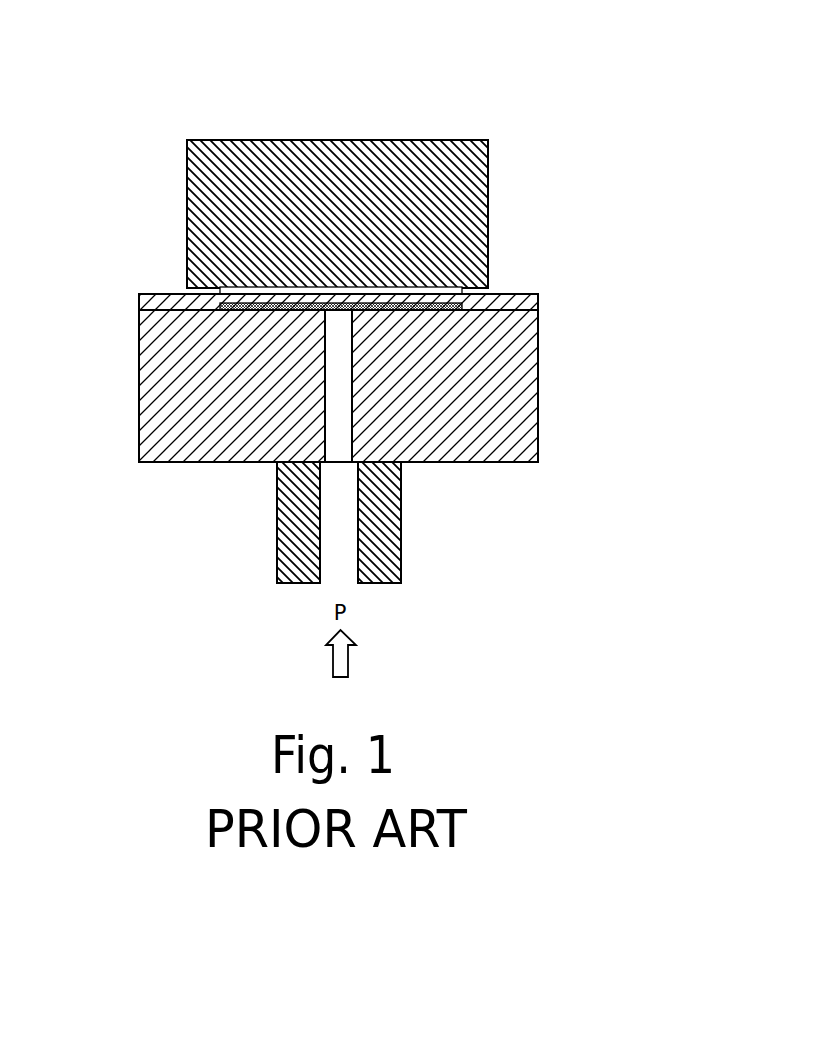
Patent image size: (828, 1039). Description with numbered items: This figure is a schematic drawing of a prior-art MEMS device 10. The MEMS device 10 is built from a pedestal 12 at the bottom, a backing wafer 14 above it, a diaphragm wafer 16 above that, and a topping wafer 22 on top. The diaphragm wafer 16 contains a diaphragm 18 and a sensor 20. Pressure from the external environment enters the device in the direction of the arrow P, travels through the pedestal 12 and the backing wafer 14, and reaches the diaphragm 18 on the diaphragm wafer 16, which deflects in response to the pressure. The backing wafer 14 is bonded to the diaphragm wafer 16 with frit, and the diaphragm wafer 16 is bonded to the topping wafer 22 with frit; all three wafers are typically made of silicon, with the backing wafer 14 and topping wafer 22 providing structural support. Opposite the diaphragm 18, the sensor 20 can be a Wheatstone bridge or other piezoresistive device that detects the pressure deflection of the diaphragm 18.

The MEMS device 10 is at (143, 103).
The pedestal 12 is at (380, 532).
The backing wafer 14 is at (490, 434).
The diaphragm wafer 16 is at (518, 302).
The diaphragm 18 is at (452, 303).
The sensor 20 is at (427, 287).
The topping wafer 22 is at (393, 198).